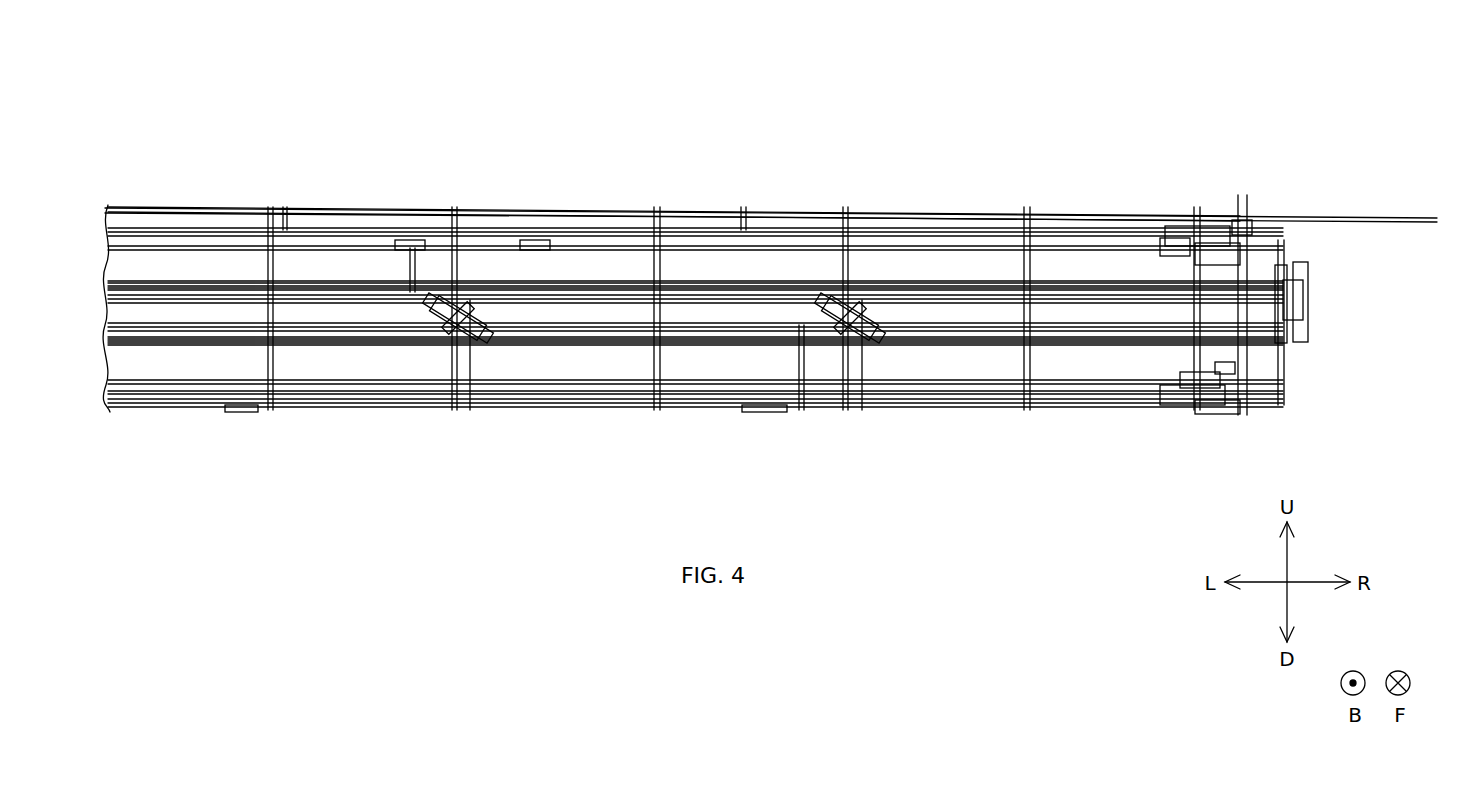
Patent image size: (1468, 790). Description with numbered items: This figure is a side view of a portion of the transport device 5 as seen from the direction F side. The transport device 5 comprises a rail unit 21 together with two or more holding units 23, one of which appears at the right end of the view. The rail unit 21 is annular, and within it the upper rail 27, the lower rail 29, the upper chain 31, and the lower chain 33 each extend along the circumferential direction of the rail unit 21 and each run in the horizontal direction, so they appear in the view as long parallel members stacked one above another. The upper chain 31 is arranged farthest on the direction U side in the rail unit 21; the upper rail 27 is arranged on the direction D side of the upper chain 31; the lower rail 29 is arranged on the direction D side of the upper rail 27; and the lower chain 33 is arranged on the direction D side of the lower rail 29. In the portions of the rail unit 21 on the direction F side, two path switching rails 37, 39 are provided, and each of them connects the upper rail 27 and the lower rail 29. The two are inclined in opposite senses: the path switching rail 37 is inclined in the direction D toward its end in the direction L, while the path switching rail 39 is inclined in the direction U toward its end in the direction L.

The transport device 5 is at (1322, 108).
The rail unit 21 is at (1143, 412).
The holding unit 23 is at (1308, 272).
The upper rail 27 is at (516, 292).
The lower rail 29 is at (588, 337).
The upper chain 31 is at (1170, 235).
The lower chain 33 is at (1203, 413).
The path switching rail 37 is at (855, 335).
The path switching rail 39 is at (448, 335).